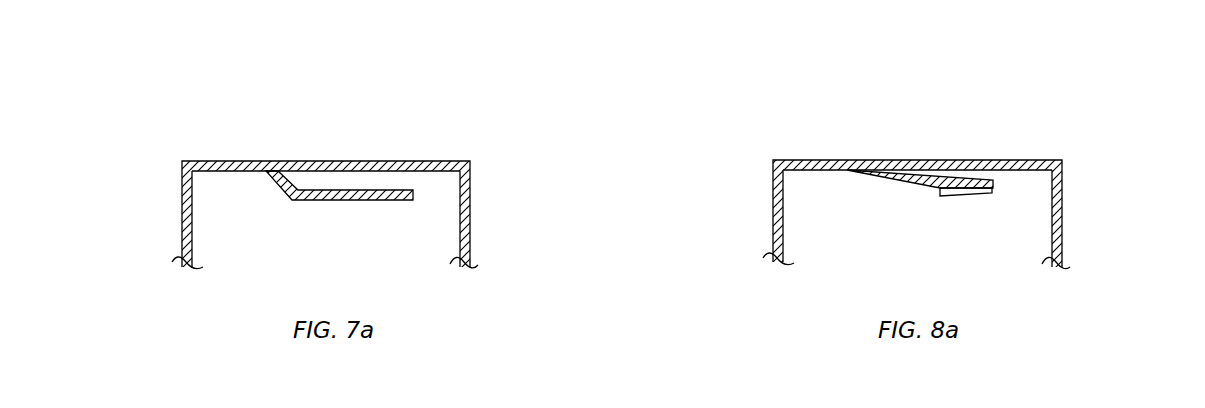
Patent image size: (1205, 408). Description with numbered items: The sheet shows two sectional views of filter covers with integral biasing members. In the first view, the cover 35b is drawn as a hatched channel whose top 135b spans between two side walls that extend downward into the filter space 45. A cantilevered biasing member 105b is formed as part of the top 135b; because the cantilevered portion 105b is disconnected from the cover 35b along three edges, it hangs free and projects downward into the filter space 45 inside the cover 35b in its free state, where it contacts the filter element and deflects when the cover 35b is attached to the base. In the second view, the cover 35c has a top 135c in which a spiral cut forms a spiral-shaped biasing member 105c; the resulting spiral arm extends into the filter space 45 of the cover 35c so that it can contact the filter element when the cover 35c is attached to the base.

In FIG. 7A, the top of the cover 135b is at (203, 161).
In FIG. 7A, the cover 35b is at (182, 204).
In FIG. 7A, the cantilevered biasing member 105b is at (340, 200).
In FIG. 8A, the top of the cover 135c is at (795, 160).
In FIG. 8A, the cover 35c is at (1062, 212).
In FIG. 8A, the biasing member 105c is at (955, 196).
In FIG. 7A, the filter space 45 is at (223, 323).
In FIG. 8A, the filter space 45 is at (795, 362).